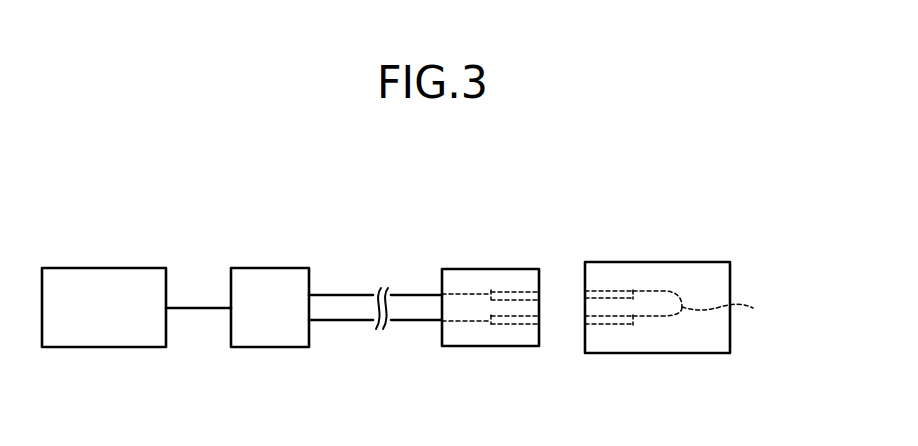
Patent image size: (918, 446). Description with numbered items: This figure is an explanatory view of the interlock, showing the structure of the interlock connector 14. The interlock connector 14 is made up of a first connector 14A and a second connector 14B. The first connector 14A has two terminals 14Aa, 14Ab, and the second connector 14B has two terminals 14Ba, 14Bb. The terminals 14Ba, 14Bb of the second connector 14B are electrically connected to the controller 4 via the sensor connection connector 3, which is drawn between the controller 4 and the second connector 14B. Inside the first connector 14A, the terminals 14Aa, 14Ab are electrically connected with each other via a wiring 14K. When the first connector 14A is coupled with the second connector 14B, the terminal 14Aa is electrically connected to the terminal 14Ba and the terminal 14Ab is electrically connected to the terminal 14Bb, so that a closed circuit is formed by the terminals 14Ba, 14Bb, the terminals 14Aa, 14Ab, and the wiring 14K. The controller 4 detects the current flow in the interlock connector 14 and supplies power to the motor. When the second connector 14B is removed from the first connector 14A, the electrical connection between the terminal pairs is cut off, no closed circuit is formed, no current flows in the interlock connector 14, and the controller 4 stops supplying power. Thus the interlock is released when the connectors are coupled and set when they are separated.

The controller 4 is at (107, 279).
The sensor connection connector 3 is at (272, 279).
The interlock connector 14 is at (615, 299).
The first connector 14A is at (688, 319).
The second connector 14B is at (492, 323).
The terminal 14Aa is at (610, 289).
The terminal 14Ab is at (612, 326).
The terminal 14Ba is at (518, 289).
The terminal 14Bb is at (523, 326).
The wiring 14K is at (738, 310).